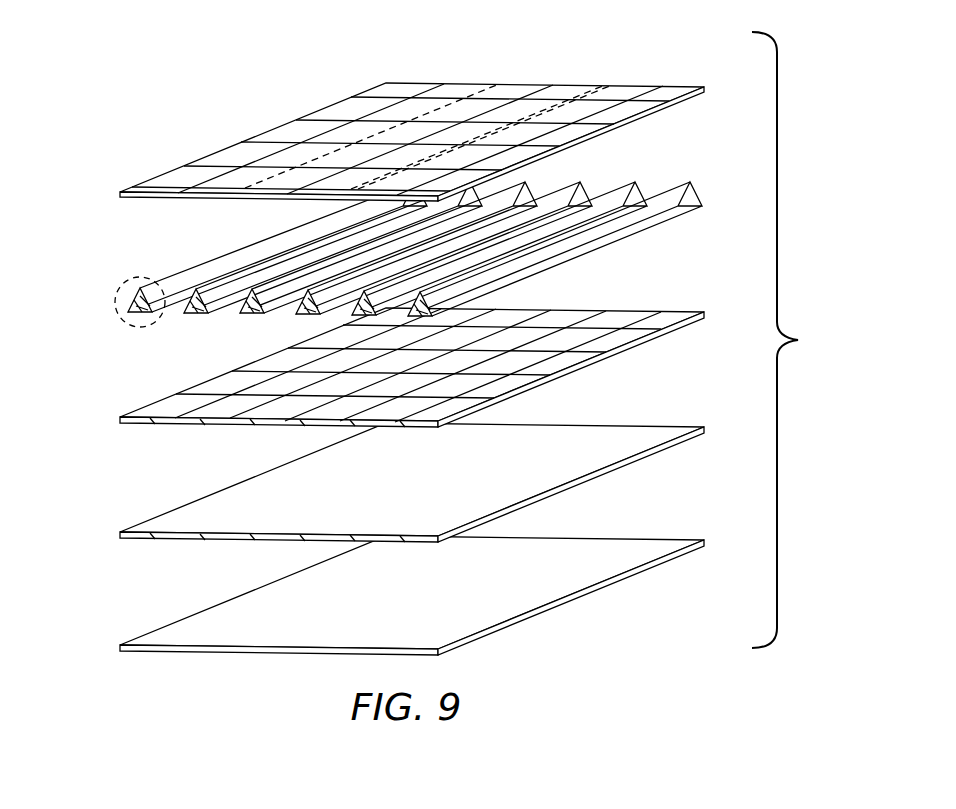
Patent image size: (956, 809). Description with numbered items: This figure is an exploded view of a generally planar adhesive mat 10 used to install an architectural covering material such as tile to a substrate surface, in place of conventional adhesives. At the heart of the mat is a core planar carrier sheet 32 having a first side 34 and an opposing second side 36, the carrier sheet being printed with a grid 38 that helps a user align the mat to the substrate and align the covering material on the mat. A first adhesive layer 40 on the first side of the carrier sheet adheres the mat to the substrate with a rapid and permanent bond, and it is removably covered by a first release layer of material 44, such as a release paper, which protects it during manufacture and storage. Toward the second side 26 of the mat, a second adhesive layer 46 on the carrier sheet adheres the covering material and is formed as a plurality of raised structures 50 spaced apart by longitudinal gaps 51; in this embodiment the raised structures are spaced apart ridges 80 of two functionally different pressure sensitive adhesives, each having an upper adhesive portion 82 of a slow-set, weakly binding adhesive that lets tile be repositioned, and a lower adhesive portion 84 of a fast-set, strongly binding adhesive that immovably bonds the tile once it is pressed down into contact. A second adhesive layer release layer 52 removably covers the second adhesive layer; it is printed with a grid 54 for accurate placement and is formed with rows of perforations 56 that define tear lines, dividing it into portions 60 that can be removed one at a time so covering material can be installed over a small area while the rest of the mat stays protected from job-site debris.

The assembly 10 is at (108, 308).
The second side 26 is at (612, 92).
The carrier sheet 32 is at (379, 372).
The first side 34 is at (160, 421).
The second side 36 is at (157, 407).
The grid 38 is at (628, 327).
The first adhesive layer 40 is at (118, 532).
The first release layer of material 44 is at (118, 645).
The second adhesive layer 46 is at (117, 275).
The raised structures 50 is at (434, 248).
The longitudinal gaps 51 is at (172, 345).
The second adhesive layer release layer 52 is at (392, 114).
The grid 54 is at (198, 163).
The rows of perforations 56 is at (453, 87).
The portions of the second release layer of material 60 is at (397, 86).
The spaced apart ridges 80 is at (587, 196).
The upper adhesive portion 82 is at (653, 203).
The lower adhesive portion 84 is at (670, 212).